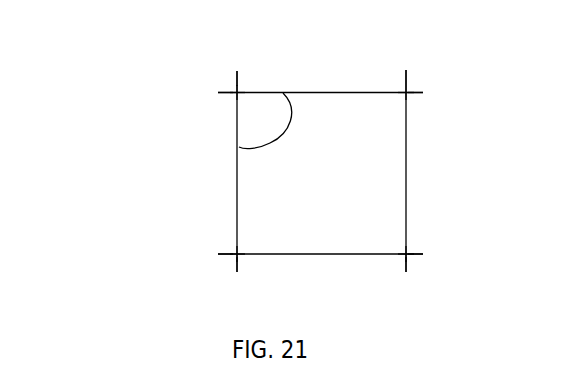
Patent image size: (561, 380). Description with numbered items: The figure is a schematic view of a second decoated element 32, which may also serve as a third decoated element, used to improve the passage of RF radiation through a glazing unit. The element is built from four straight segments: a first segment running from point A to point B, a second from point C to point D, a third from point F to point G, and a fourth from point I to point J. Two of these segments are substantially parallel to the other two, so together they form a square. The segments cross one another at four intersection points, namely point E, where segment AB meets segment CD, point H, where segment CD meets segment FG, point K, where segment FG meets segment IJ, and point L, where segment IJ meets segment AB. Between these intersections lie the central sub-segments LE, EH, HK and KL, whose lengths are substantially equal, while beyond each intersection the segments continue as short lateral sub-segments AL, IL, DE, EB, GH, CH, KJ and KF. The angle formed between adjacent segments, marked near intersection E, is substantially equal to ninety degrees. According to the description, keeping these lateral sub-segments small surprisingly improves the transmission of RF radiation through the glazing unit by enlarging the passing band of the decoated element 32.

The second decoated element 32 is at (141, 66).
The point A is at (237, 282).
The point B is at (235, 63).
The point C is at (432, 95).
The point D is at (211, 93).
The intersection point E is at (243, 86).
The point F is at (411, 282).
The point G is at (405, 58).
The intersection point H is at (399, 105).
The point I is at (217, 258).
The point J is at (428, 258).
The intersection point K is at (399, 246).
The intersection point L is at (245, 247).